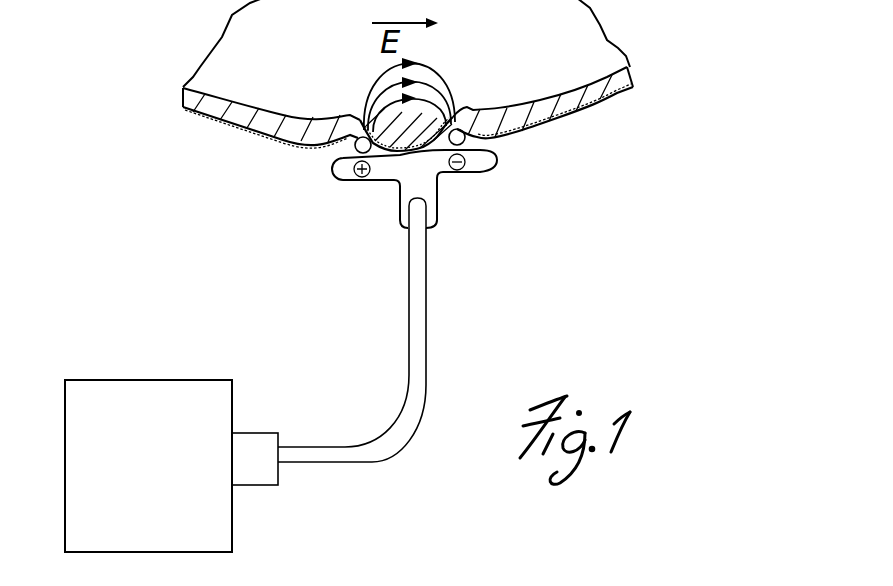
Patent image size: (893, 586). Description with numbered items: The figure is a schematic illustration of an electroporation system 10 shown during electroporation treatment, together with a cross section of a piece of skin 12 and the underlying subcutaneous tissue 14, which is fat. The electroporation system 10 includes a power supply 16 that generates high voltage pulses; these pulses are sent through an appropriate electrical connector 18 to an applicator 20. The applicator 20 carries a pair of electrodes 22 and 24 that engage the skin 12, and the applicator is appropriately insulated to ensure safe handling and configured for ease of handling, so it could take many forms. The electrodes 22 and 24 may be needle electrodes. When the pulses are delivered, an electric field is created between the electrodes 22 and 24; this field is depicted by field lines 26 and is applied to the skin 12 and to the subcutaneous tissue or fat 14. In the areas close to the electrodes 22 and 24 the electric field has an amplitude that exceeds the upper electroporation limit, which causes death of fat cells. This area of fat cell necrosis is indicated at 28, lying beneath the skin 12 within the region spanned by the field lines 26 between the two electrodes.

The electroporation system 10 is at (116, 218).
The skin 12 is at (180, 101).
The subcutaneous tissue 14 is at (184, 88).
The power supply 16 is at (143, 380).
The electrical connector 18 is at (328, 464).
The applicator 20 is at (448, 195).
The electrode 22 is at (354, 147).
The electrode 24 is at (497, 160).
The field lines 26 is at (428, 72).
The area of fat cell necrosis 28 is at (420, 100).